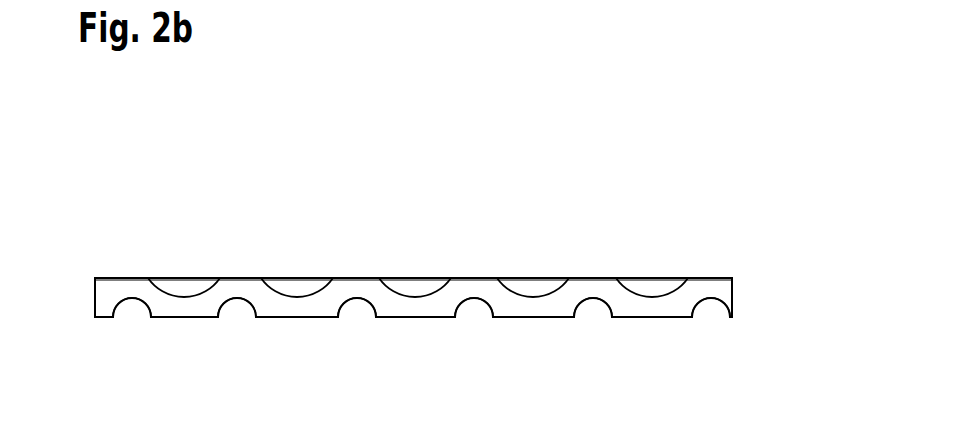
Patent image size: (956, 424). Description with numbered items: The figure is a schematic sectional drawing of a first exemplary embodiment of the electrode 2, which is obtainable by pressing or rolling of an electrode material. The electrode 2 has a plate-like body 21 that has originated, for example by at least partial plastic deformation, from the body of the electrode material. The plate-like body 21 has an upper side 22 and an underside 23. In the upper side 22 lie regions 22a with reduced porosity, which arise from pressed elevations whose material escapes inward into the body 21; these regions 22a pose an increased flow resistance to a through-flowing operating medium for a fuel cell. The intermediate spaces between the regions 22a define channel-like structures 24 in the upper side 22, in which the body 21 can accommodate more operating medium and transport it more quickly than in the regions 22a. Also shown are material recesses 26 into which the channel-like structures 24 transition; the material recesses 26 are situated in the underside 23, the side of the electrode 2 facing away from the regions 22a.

The electrode 2 is at (442, 292).
The plate-like body 21 is at (733, 290).
The upper side 22 is at (103, 279).
The regions with reduced porosity 22a is at (175, 284).
The underside 23 is at (98, 318).
The channel-like structures 24 is at (153, 298).
The material recesses 26 is at (134, 303).